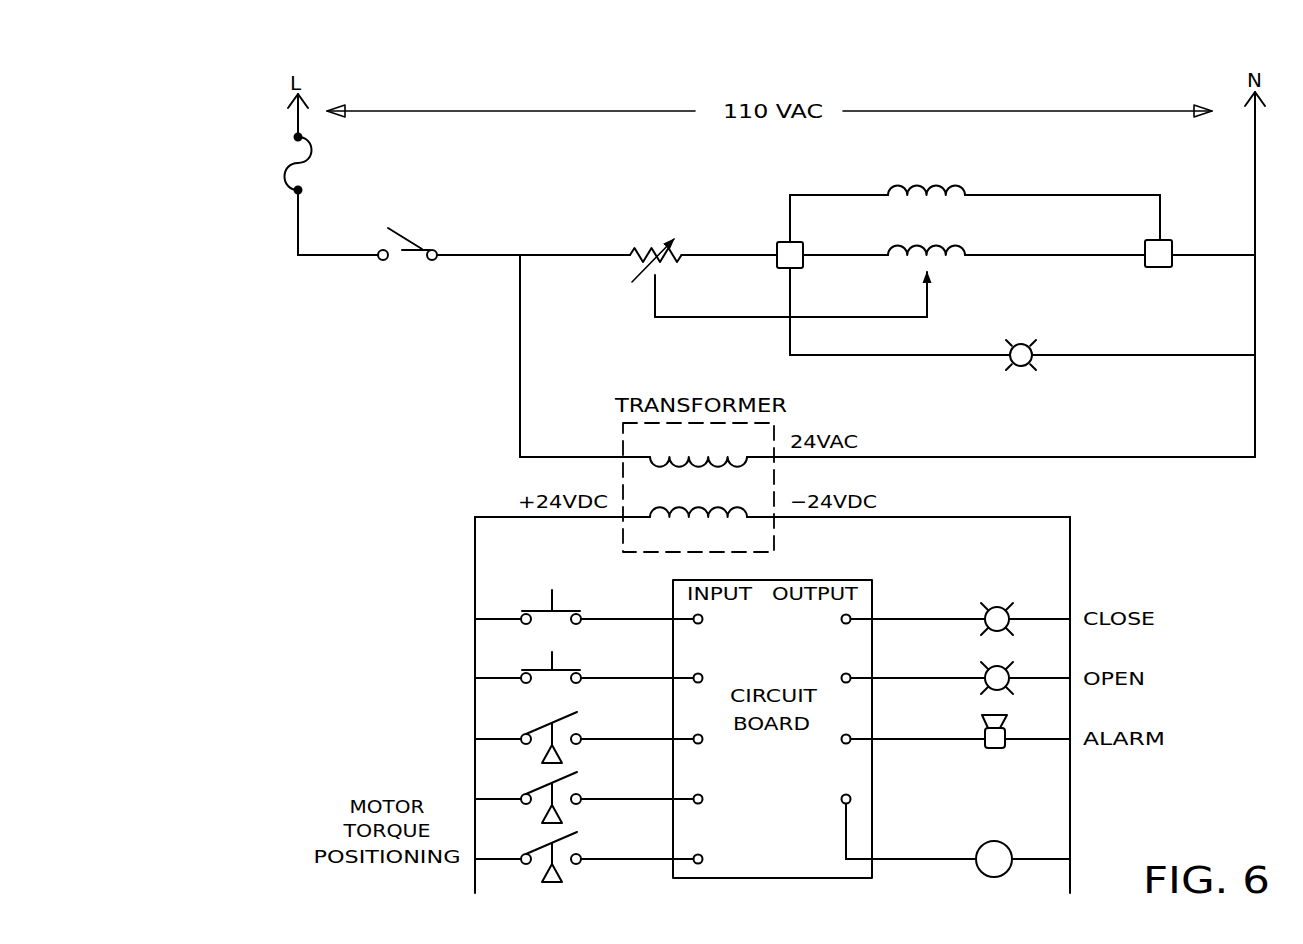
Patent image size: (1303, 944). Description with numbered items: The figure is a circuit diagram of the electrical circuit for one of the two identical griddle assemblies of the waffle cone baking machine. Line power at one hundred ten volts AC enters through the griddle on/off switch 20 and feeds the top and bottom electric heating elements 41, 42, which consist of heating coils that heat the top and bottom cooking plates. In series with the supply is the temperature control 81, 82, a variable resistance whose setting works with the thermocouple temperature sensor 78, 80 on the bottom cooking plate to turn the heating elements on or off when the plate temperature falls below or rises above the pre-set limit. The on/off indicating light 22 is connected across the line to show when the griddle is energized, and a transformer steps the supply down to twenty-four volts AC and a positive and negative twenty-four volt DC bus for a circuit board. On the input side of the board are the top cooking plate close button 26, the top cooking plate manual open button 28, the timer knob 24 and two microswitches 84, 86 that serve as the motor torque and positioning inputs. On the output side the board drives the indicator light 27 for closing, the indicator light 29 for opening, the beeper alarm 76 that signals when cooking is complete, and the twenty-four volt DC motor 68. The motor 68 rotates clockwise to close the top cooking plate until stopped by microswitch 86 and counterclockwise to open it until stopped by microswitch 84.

The griddle on/off switch 20 is at (414, 222).
The on/off indicating light 22 is at (1022, 384).
The timer knob 24 is at (592, 715).
The top cooking plate close button 26 is at (542, 582).
The indicator light 27 is at (997, 588).
The top cooking plate manual open button 28 is at (538, 659).
The indicator light 29 is at (988, 652).
The top electric heating element 41 is at (950, 168).
The bottom electric heating element 42 is at (950, 229).
The motor 68 is at (986, 828).
The beeper alarm 76 is at (991, 760).
The thermocouple temperature sensor 78 is at (863, 294).
The thermocouple temperature sensor 80 is at (950, 277).
The temperature control 81 is at (609, 229).
The temperature control 82 is at (646, 218).
The microswitch 84 is at (592, 778).
The microswitch 86 is at (592, 840).